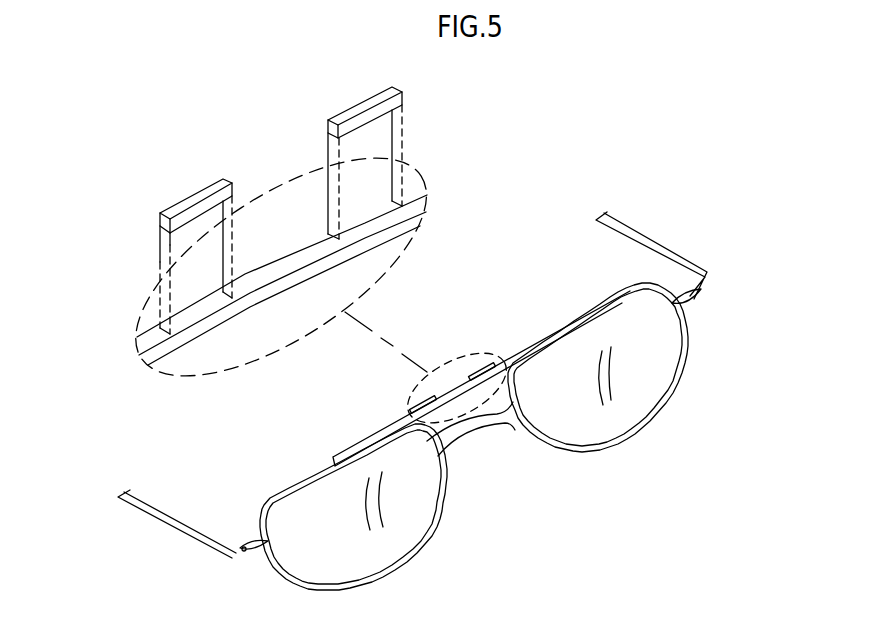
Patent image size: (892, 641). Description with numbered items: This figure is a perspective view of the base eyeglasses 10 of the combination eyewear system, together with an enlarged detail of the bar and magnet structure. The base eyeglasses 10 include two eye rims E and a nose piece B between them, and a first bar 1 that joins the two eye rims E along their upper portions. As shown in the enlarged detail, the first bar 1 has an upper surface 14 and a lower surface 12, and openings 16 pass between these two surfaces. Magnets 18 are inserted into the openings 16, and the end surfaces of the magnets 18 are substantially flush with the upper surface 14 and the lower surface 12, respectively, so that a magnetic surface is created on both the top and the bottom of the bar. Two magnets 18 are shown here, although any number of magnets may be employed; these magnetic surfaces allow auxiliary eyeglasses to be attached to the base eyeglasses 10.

The base eyeglasses 10 is at (473, 371).
The first bar 1 is at (543, 345).
The nose piece B is at (477, 427).
The eye rims E is at (633, 422).
The lower surface 12 is at (337, 250).
The upper surface 14 is at (312, 243).
The openings 16 is at (210, 312).
The magnets 18 is at (177, 208).